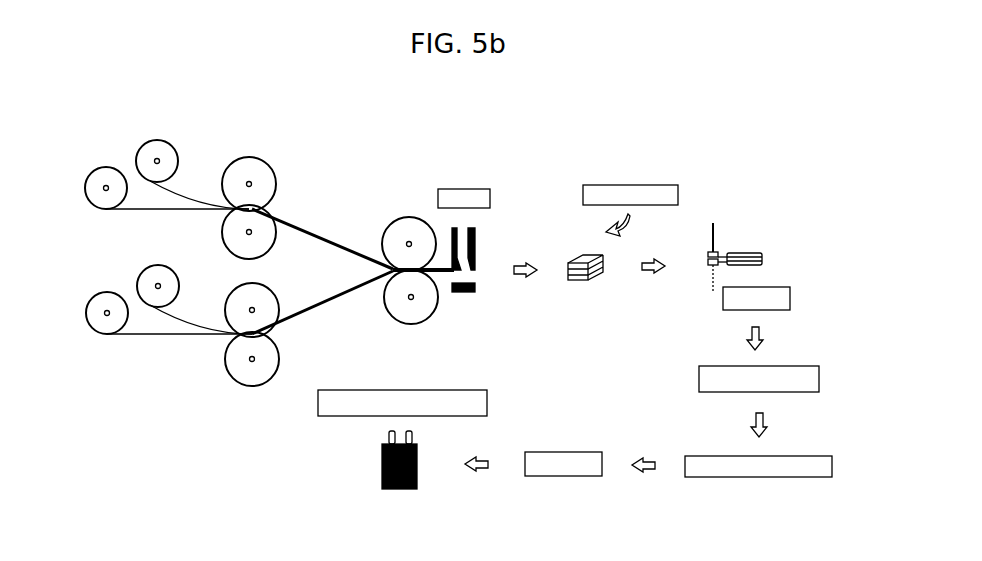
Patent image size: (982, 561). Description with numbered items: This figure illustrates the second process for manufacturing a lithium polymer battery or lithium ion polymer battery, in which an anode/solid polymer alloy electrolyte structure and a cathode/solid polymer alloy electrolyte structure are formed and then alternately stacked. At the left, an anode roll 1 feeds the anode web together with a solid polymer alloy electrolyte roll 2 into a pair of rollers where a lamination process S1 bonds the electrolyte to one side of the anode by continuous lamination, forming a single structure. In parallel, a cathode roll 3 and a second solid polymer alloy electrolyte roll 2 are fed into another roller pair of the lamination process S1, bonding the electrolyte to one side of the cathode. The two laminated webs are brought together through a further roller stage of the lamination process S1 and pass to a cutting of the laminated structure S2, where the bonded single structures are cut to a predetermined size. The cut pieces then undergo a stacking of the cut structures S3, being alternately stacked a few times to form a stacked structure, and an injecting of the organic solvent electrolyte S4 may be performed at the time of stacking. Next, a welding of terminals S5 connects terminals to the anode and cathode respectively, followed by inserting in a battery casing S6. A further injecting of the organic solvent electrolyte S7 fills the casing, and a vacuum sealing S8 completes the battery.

The anode roll 1 is at (88, 208).
The solid polymer alloy electrolyte roll 2 is at (132, 147).
The cathode roll 3 is at (93, 338).
The lamination process S1 is at (272, 162).
The cutting of the laminated structure S2 is at (478, 185).
The stacking of the cut structures S3 is at (579, 283).
The injecting of the organic solvent electrolyte S4 is at (618, 181).
The welding of terminals S5 is at (752, 250).
The inserting in a battery casing S6 is at (803, 363).
The injecting of the organic solvent electrolyte S7 is at (745, 478).
The vacuum sealing S8 is at (513, 479).